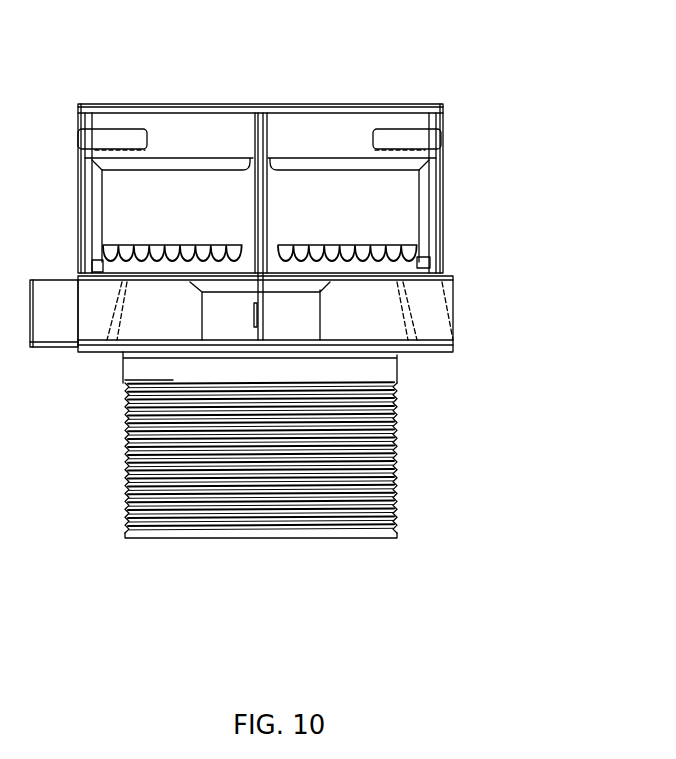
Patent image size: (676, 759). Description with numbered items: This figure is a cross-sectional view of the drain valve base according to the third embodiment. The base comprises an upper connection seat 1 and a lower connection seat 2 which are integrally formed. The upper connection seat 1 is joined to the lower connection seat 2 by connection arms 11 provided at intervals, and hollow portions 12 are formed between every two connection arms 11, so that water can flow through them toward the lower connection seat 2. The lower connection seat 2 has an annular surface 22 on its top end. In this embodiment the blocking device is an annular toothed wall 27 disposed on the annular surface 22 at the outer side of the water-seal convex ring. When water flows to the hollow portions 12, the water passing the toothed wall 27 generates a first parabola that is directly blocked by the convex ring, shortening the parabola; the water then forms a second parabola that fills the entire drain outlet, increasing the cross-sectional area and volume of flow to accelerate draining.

The upper connection seat 1 is at (437, 103).
The connection arms 11 is at (430, 212).
The hollow portions 12 is at (337, 190).
The annular toothed wall 27 is at (420, 252).
The annular surface 22 is at (437, 277).
The lower connection seat 2 is at (397, 392).